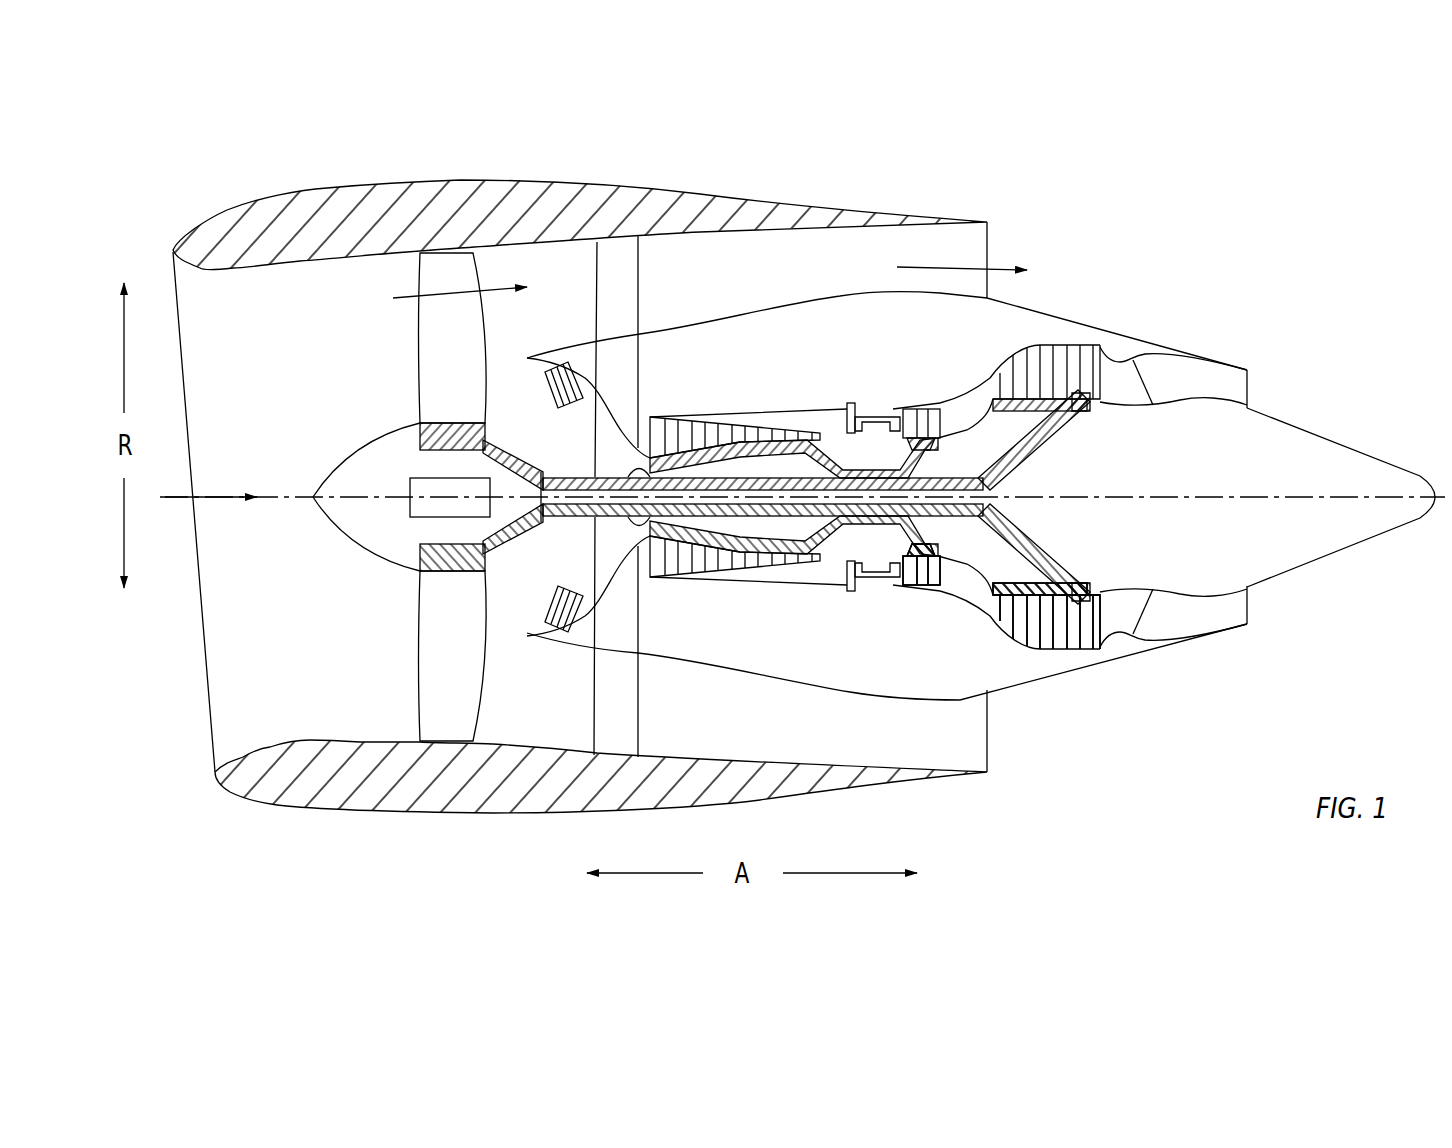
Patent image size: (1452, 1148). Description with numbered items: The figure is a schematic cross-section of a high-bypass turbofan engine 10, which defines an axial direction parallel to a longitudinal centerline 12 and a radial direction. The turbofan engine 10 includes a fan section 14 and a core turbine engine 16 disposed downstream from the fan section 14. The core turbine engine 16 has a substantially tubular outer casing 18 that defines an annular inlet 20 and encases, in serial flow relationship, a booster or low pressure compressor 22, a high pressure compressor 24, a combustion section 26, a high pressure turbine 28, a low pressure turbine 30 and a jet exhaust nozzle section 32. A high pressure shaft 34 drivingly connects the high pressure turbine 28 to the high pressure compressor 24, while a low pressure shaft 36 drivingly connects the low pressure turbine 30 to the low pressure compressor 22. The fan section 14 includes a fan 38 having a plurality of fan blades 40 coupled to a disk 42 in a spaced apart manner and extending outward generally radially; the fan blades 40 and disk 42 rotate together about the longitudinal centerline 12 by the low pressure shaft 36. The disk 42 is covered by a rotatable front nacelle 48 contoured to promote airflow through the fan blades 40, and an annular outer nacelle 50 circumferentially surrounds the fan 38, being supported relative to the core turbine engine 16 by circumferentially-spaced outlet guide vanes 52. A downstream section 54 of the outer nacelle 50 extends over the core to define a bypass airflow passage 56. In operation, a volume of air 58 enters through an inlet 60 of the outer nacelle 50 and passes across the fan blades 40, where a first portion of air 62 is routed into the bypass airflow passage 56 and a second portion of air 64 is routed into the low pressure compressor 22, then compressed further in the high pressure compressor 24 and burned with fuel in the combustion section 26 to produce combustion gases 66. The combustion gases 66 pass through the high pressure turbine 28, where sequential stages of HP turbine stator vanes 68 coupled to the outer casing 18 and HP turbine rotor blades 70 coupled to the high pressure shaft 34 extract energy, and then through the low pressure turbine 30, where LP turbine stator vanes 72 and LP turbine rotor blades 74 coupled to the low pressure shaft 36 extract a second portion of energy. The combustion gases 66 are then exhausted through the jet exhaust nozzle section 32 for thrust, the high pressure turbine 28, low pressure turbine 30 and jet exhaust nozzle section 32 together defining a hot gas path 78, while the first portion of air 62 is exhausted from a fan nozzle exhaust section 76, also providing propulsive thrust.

The turbofan engine 10 is at (1233, 250).
The longitudinal centerline 12 is at (1160, 494).
The fan section 14 is at (497, 158).
The core turbine engine 16 is at (810, 368).
The outer casing 18 is at (833, 690).
The annular inlet 20 is at (537, 618).
The low pressure compressor 22 is at (593, 590).
The high pressure compressor 24 is at (672, 578).
The combustion section 26 is at (868, 580).
The high pressure turbine 28 is at (943, 577).
The low pressure turbine 30 is at (1087, 650).
The jet exhaust nozzle section 32 is at (1252, 380).
The high pressure shaft 34 is at (913, 443).
The low pressure shaft 36 is at (597, 475).
The fan 38 is at (403, 340).
The fan blades 40 is at (413, 683).
The disk 42 is at (420, 433).
The rotatable front nacelle 48 is at (340, 463).
The outer nacelle 50 is at (483, 815).
The outlet guide vanes 52 is at (638, 262).
The downstream section 54 is at (800, 195).
The bypass airflow passage 56 is at (757, 284).
The volume of air 58 is at (210, 490).
The inlet 60 is at (210, 728).
The first portion of air 62 is at (433, 297).
The second portion of air 64 is at (590, 395).
The combustion gases 66 is at (990, 380).
The HP turbine stator vanes 68 is at (907, 582).
The HP turbine rotor blades 70 is at (923, 592).
The LP turbine stator vanes 72 is at (997, 617).
The LP turbine rotor blades 74 is at (1007, 627).
The fan nozzle exhaust section 76 is at (988, 248).
The hot gas path 78 is at (977, 380).